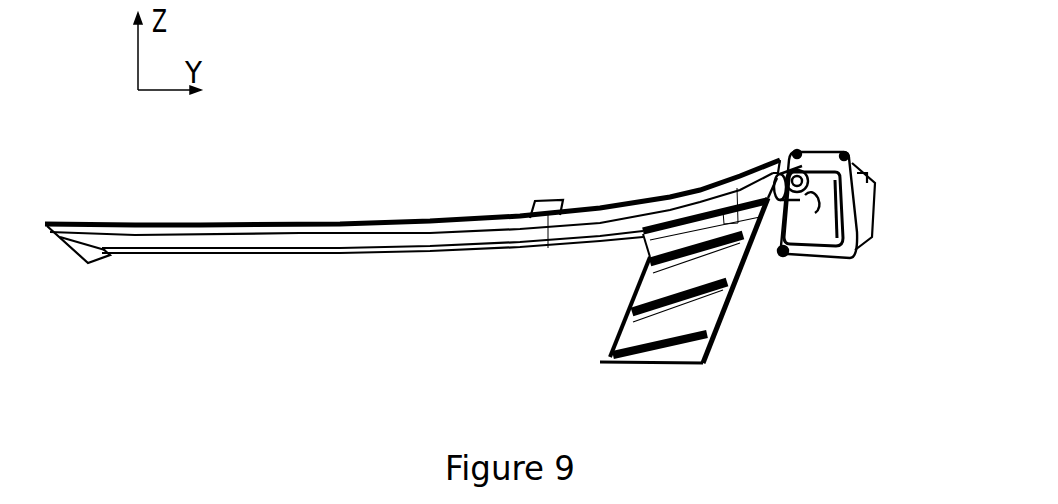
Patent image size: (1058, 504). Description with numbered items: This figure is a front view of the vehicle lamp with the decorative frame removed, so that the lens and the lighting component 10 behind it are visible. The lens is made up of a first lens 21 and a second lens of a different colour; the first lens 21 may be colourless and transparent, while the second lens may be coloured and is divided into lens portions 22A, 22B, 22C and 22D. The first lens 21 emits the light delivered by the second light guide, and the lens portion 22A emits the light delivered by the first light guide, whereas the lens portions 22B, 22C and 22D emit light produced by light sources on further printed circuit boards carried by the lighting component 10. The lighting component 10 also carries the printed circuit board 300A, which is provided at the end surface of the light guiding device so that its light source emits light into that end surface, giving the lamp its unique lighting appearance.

The first lens 21 is at (446, 240).
The lens portion 22A is at (685, 212).
The lens portion 22B is at (648, 262).
The lens portion 22C is at (635, 312).
The lens portion 22D is at (605, 352).
The printed circuit board 300A is at (810, 153).
The lighting component 10 is at (843, 200).